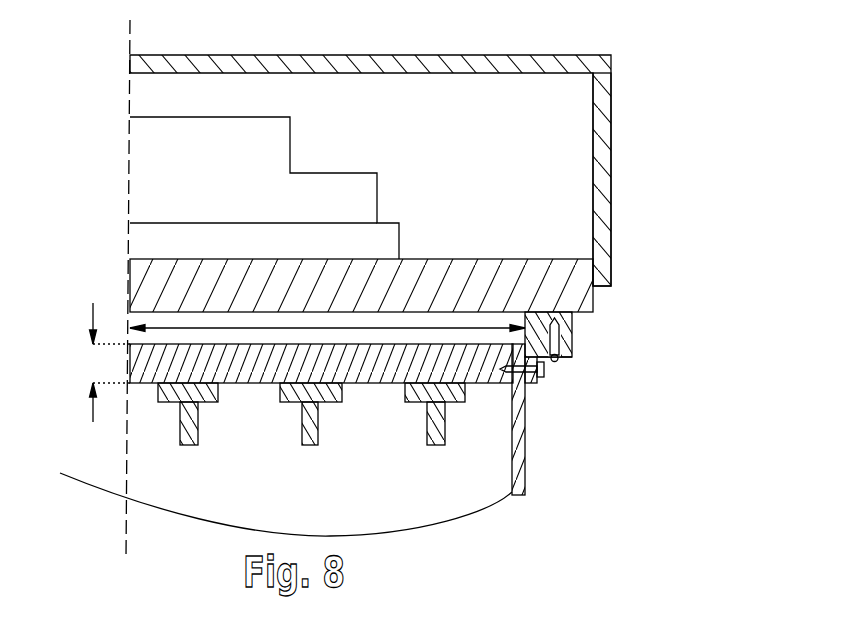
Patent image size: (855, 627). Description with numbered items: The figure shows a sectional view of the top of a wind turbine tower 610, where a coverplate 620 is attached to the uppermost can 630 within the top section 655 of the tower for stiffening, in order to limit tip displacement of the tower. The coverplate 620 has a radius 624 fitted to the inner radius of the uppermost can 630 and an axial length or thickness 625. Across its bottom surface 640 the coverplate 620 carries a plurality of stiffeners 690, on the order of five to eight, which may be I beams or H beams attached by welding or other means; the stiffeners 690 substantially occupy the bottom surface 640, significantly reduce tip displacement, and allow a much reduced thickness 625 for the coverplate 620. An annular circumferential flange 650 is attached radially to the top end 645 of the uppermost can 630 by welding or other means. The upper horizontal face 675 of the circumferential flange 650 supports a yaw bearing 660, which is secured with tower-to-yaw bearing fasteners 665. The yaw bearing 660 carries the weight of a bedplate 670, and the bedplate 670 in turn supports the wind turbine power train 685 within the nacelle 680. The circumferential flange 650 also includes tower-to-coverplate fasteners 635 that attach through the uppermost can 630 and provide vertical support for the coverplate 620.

The wind turbine tower 610 is at (357, 43).
The coverplate 620 is at (152, 370).
The radius 624 is at (298, 328).
The axial length or thickness 625 is at (99, 362).
The uppermost can 630 is at (525, 480).
The tower-to-coverplate fasteners 635 is at (545, 377).
The bottom surface 640 is at (255, 383).
The top end 645 is at (498, 370).
The annular circumferential flange 650 is at (573, 352).
The top section 655 is at (540, 470).
The yaw bearing 660 is at (586, 326).
The tower-to-yaw bearing fasteners 665 is at (556, 361).
The bedplate 670 is at (593, 297).
The upper horizontal face 675 is at (573, 333).
The nacelle 680 is at (611, 212).
The wind turbine power train 685 is at (290, 147).
The stiffeners 690 is at (318, 425).